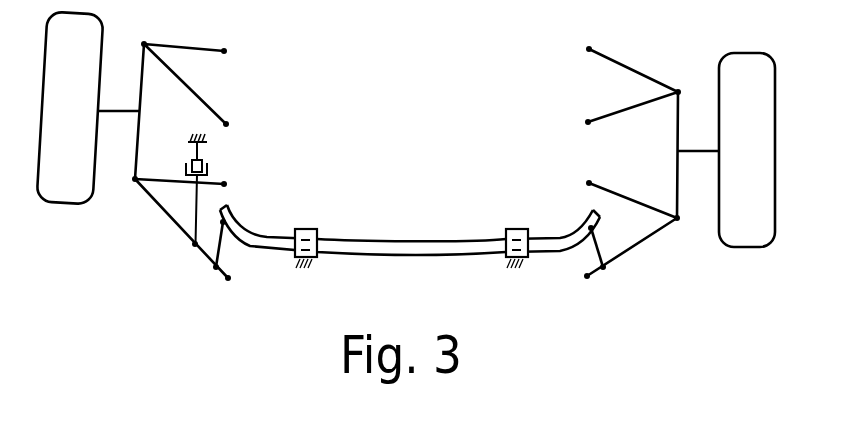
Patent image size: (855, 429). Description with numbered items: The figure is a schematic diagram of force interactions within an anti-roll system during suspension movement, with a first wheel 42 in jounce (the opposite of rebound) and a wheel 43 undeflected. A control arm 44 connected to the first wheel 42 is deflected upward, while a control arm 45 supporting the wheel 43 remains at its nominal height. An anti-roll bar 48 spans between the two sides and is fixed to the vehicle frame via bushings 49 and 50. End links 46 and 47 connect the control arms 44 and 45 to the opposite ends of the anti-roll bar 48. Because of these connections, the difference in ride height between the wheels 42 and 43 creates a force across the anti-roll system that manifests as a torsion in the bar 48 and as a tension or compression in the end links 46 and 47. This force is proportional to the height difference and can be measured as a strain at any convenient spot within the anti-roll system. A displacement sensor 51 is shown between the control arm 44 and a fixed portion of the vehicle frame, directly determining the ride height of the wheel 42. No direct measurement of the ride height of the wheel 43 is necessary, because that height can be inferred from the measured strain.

The first wheel 42 is at (52, 205).
The wheel 43 is at (775, 175).
The control arm 44 is at (168, 221).
The control arm 45 is at (647, 240).
The end link 46 is at (224, 241).
The end link 47 is at (593, 250).
The anti-roll bar 48 is at (413, 246).
The bushing 49 is at (305, 229).
The bushing 50 is at (514, 229).
The displacement sensor 51 is at (205, 170).